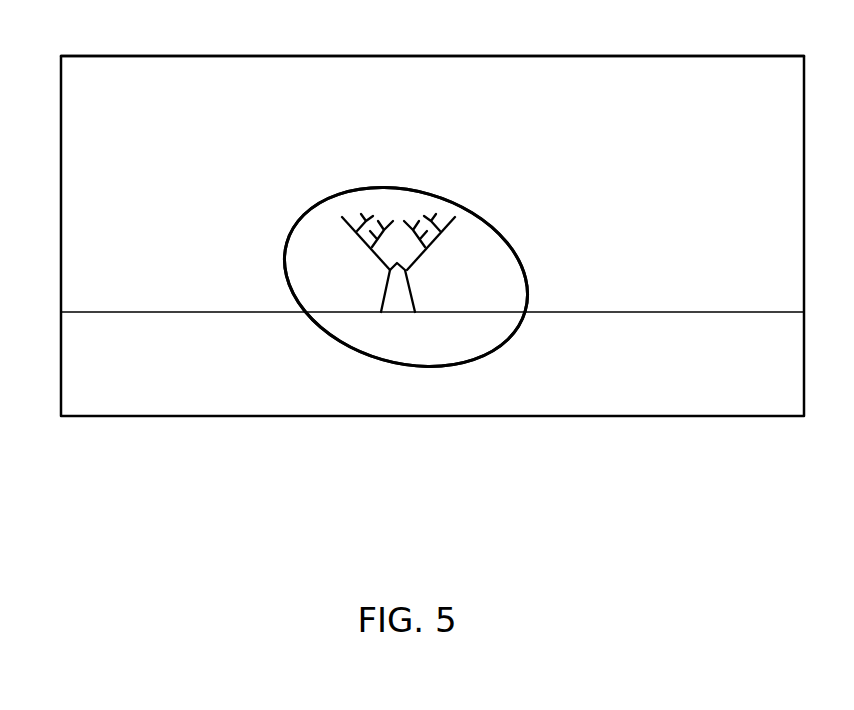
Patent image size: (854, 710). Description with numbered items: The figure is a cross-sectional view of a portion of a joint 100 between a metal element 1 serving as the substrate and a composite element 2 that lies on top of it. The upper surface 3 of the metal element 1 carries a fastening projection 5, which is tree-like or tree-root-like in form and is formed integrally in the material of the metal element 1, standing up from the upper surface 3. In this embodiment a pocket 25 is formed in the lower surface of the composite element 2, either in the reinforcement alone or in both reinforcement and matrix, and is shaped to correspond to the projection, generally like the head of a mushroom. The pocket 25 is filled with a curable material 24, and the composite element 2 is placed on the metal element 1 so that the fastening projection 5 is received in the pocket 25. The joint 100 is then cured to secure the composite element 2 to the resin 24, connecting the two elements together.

The joint 100 is at (414, 291).
The metal element 1 is at (283, 417).
The composite element 2 is at (148, 55).
The upper surface 3 is at (92, 312).
The fastening projection 5 is at (430, 257).
The curable material 24 is at (307, 273).
The pocket 25 is at (317, 202).